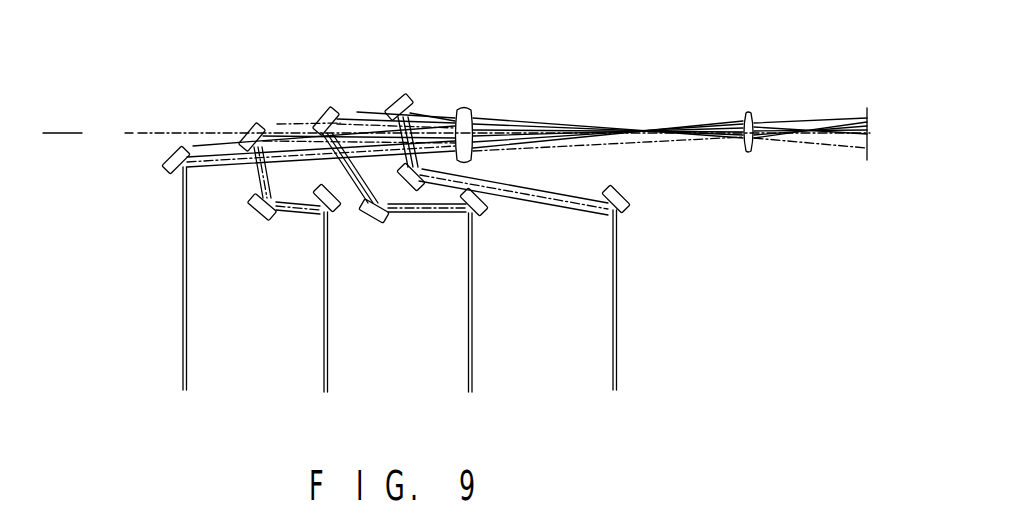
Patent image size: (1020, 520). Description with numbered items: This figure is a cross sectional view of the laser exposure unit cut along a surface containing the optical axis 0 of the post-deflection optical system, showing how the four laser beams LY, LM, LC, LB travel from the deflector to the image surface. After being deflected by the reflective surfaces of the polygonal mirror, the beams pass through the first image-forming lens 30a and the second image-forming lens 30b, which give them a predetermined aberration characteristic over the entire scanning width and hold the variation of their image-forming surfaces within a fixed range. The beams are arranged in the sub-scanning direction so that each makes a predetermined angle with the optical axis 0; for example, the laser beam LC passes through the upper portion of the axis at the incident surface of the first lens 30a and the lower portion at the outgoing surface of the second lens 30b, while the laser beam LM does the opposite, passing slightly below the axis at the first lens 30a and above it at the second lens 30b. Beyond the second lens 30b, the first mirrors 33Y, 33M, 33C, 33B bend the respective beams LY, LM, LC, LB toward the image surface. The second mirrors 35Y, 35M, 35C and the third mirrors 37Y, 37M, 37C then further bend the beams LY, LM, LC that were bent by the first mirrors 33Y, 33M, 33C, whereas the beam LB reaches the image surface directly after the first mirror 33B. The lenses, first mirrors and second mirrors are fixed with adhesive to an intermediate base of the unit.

The optical axis 0 is at (85, 134).
The first mirror 33B is at (177, 148).
The first mirror 33C is at (256, 127).
The first mirror 33M is at (326, 110).
The first mirror 33Y is at (399, 97).
The second image-forming lens 30b is at (463, 107).
The first image-forming lens 30a is at (748, 112).
The second mirror 35C is at (260, 212).
The second mirror 35M is at (378, 222).
The second mirror 35Y is at (420, 186).
The third mirror 37C is at (335, 212).
The third mirror 37M is at (484, 213).
The third mirror 37Y is at (624, 212).
The laser beam LB is at (187, 318).
The laser beam LC is at (328, 333).
The laser beam LM is at (470, 337).
The laser beam LY is at (615, 335).